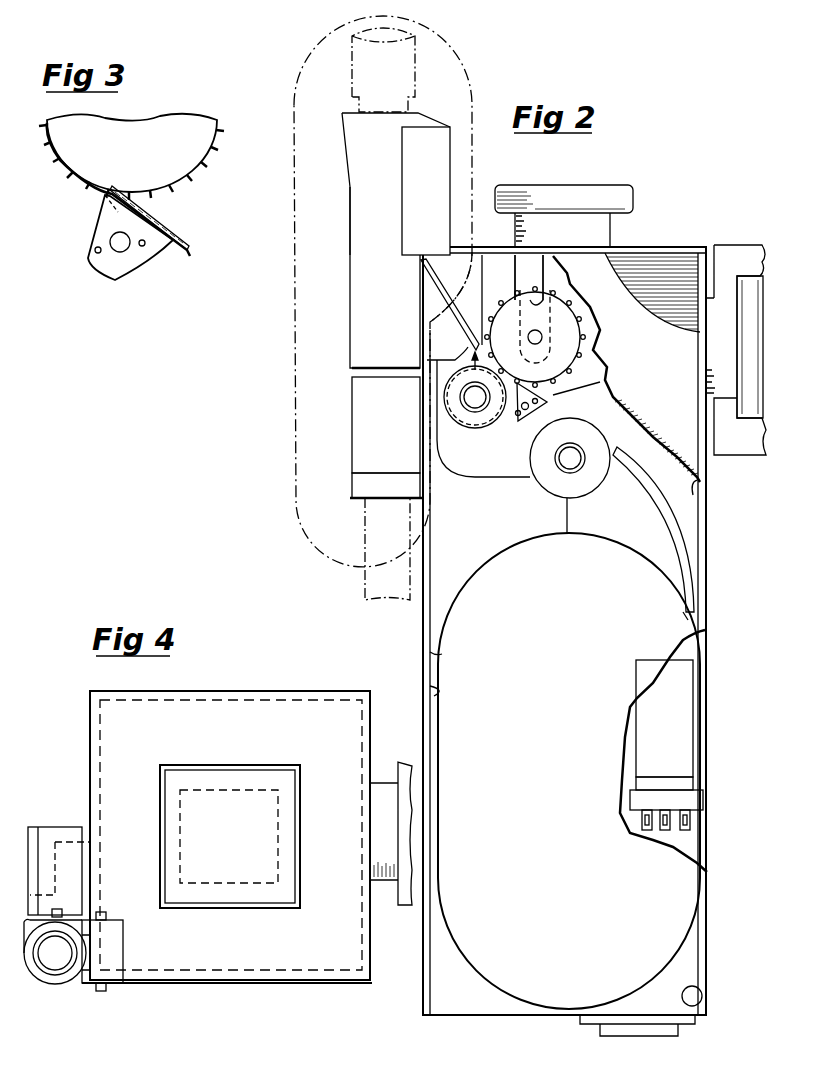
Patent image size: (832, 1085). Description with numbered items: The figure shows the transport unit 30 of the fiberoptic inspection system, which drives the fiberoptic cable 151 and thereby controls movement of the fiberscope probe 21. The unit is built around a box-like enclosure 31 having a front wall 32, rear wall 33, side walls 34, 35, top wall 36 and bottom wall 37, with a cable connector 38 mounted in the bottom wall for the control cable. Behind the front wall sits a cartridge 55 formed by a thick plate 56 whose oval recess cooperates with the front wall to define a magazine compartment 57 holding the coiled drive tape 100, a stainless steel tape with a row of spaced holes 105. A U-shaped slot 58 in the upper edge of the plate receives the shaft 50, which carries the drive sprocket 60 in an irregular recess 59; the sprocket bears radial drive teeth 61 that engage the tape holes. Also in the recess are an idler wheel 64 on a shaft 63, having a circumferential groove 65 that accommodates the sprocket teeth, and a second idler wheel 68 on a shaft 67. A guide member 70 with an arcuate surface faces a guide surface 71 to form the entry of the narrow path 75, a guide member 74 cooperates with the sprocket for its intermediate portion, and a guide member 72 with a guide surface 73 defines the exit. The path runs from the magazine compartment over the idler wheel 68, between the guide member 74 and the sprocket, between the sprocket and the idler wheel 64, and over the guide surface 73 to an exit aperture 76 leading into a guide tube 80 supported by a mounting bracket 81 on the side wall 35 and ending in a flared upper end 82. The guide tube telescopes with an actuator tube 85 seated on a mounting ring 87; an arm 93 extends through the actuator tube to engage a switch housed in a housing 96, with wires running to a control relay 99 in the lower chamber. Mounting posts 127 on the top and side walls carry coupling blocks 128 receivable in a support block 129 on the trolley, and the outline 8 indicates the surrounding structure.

In FIG. 2, the housing outline 8 is at (470, 66).
In FIG. 2, the fiberscope probe 21 is at (416, 42).
In FIG. 2, the transport unit 30 is at (702, 198).
In FIG. 2, the enclosure 31 is at (660, 247).
In FIG. 2, the front wall 32 is at (704, 500).
In FIG. 4, the front wall 32 is at (266, 981).
In FIG. 4, the rear wall 33 is at (262, 691).
In FIG. 4, the side wall 34 is at (368, 758).
In FIG. 4, the side wall 35 is at (92, 752).
In FIG. 2, the top wall 36 is at (498, 250).
In FIG. 4, the top wall 36 is at (326, 972).
In FIG. 2, the bottom wall 37 is at (500, 1018).
In FIG. 2, the cable connector 38 is at (612, 1036).
In FIG. 2, the shaft 50 is at (542, 337).
In FIG. 2, the cartridge 55 is at (424, 622).
In FIG. 2, the plate 56 is at (434, 660).
In FIG. 2, the magazine compartment 57 is at (432, 690).
In FIG. 2, the U-shaped slot 58 is at (540, 262).
In FIG. 2, the recess 59 is at (498, 476).
In FIG. 2, the drive sprocket 60 is at (588, 351).
In FIG. 3, the drive sprocket 60 is at (174, 130).
In FIG. 3, the drive teeth 61 is at (206, 160).
In FIG. 2, the shaft 63 is at (470, 406).
In FIG. 2, the idler wheel 64 is at (482, 386).
In FIG. 2, the circumferential groove 65 is at (492, 422).
In FIG. 2, the shaft 67 is at (565, 458).
In FIG. 2, the idler wheel 68 is at (556, 470).
In FIG. 2, the guide member 70 is at (597, 535).
In FIG. 2, the guide surface 71 is at (690, 596).
In FIG. 2, the guide member 72 is at (434, 330).
In FIG. 2, the guide surface 73 is at (438, 290).
In FIG. 2, the guide member 74 is at (520, 421).
In FIG. 3, the guide member 74 is at (112, 268).
In FIG. 2, the path 75 is at (687, 622).
In FIG. 2, the exit aperture 76 is at (422, 265).
In FIG. 2, the guide tube 80 is at (352, 242).
In FIG. 4, the guide tube 80 is at (58, 985).
In FIG. 2, the mounting bracket 81 is at (450, 170).
In FIG. 4, the mounting bracket 81 is at (122, 947).
In FIG. 2, the flared upper end 82 is at (345, 128).
In FIG. 2, the actuator tube 85 is at (353, 435).
In FIG. 2, the mounting ring 87 is at (354, 490).
In FIG. 4, the arm 93 is at (62, 912).
In FIG. 4, the housing 96 is at (62, 828).
In FIG. 2, the control relay 99 is at (690, 750).
In FIG. 3, the drive tape 100 is at (186, 255).
In FIG. 3, the holes 105 is at (160, 218).
In FIG. 2, the mounting posts 127 is at (612, 230).
In FIG. 4, the mounting posts 127 is at (372, 838).
In FIG. 2, the coupling block 128 is at (555, 190).
In FIG. 4, the coupling block 128 is at (213, 766).
In FIG. 2, the support block 129 is at (746, 250).
In FIG. 2, the fiberoptic cable 151 is at (365, 590).